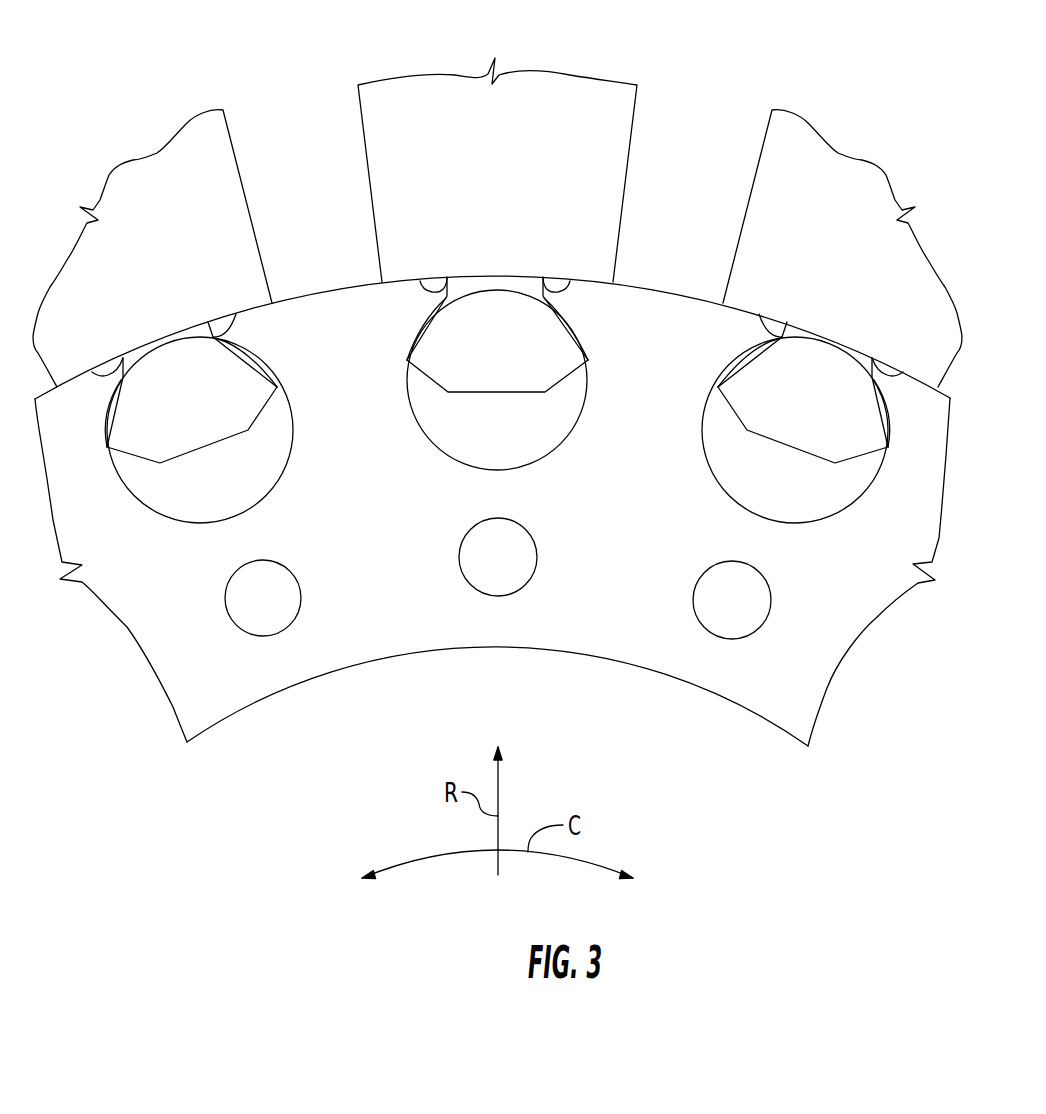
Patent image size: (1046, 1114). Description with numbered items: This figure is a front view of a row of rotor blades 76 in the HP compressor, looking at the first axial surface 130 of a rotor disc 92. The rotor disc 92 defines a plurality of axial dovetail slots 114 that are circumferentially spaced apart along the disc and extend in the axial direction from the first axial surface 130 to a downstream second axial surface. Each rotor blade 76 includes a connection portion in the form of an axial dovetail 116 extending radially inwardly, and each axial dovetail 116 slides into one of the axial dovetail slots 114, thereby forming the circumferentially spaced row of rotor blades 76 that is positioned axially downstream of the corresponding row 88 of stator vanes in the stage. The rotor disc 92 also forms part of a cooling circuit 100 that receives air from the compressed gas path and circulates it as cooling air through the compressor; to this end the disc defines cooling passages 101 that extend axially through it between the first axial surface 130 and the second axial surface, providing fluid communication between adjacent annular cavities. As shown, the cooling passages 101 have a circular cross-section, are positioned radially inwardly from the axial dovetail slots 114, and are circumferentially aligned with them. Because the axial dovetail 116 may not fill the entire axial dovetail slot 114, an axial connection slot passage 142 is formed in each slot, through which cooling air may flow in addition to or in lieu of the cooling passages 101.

The row of stator vanes 88 is at (257, 87).
The rotor blade 76 is at (166, 252).
The cooling circuit 100 is at (690, 718).
The rotor disc 92 is at (213, 688).
The axial dovetail 116 is at (443, 375).
The axial connection slot passage 142 is at (254, 484).
The axial dovetail slot 114 is at (212, 507).
The cooling passage 101 is at (490, 565).
The first axial surface 130 is at (391, 556).